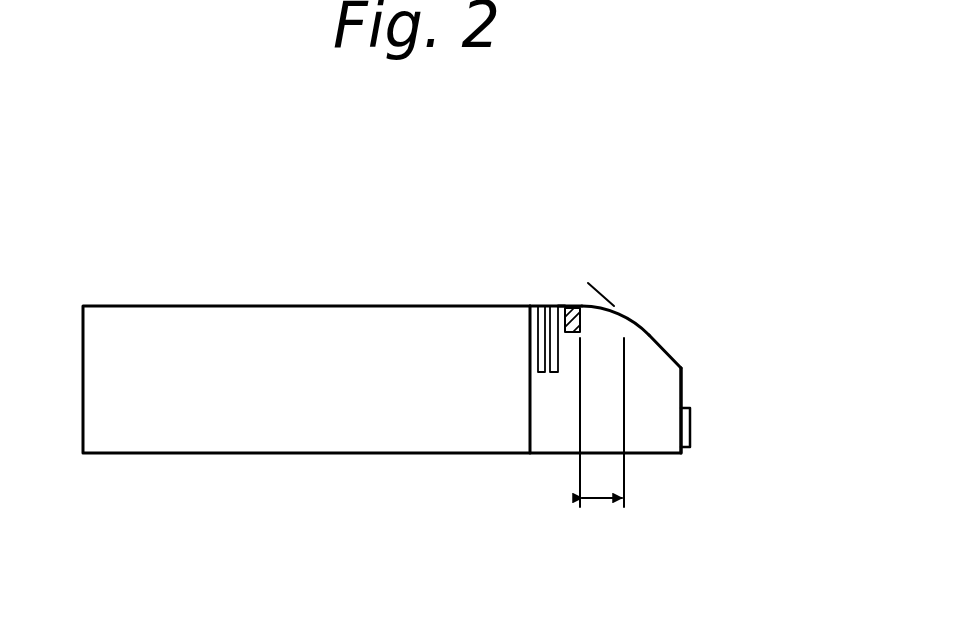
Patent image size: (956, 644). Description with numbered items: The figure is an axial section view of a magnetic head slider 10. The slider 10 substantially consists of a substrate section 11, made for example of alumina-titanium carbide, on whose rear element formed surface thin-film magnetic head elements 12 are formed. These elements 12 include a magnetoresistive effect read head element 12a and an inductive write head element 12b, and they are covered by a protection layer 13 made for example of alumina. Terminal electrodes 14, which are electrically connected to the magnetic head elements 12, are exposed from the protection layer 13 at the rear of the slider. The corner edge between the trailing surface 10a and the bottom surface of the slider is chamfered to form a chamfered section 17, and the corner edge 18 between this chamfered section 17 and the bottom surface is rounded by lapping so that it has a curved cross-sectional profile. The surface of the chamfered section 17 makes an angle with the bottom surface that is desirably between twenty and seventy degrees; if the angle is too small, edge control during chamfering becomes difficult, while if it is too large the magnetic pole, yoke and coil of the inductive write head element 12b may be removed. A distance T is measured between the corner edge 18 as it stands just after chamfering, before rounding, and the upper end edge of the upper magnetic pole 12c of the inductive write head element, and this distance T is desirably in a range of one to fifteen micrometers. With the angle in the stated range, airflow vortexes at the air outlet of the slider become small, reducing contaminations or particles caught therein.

The magnetic head slider 10 is at (397, 224).
The trailing surface 10a is at (684, 390).
The substrate section 11 is at (270, 328).
The thin-film magnetic head elements 12 is at (577, 212).
The magnetoresistive effect read head element 12a is at (542, 301).
The inductive write head element 12b is at (562, 302).
The upper magnetic pole 12c is at (573, 307).
The protection layer 13 is at (543, 433).
The terminal electrodes 14 is at (691, 426).
The chamfered section 17 is at (649, 338).
The corner edge 18 is at (623, 308).
The distance T is at (602, 422).